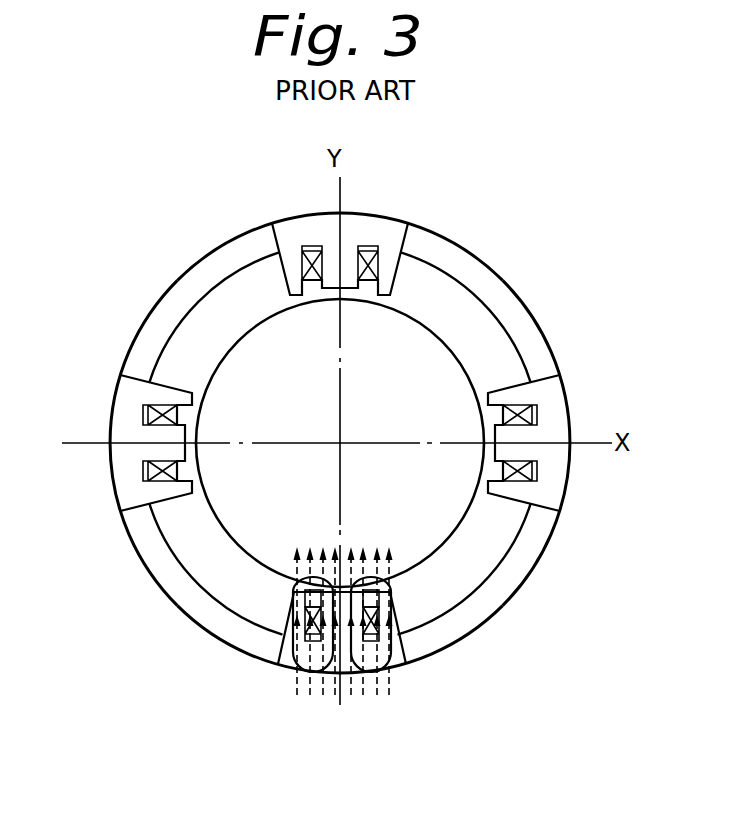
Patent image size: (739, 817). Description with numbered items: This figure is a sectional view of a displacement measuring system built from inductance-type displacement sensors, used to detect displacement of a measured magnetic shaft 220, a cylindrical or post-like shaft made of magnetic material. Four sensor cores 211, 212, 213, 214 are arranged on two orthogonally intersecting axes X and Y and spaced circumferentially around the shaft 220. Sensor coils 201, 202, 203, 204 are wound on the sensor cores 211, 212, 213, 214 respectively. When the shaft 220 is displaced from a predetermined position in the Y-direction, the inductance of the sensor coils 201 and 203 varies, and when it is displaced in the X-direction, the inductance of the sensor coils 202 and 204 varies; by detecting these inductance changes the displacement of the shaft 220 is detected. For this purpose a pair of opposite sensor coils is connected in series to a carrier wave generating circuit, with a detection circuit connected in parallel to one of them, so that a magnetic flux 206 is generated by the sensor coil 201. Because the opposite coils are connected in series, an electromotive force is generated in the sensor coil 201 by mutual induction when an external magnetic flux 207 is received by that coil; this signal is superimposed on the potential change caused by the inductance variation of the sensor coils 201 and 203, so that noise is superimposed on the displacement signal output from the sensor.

The sensor coil 201 is at (413, 664).
The sensor coil 202 is at (142, 475).
The sensor coil 203 is at (370, 244).
The sensor coil 204 is at (537, 467).
The magnetic flux 206 is at (292, 658).
The external magnetic flux 207 is at (399, 703).
The sensor core 211 is at (452, 643).
The sensor core 212 is at (113, 392).
The sensor core 213 is at (293, 215).
The sensor core 214 is at (563, 381).
The measured magnetic shaft 220 is at (428, 333).